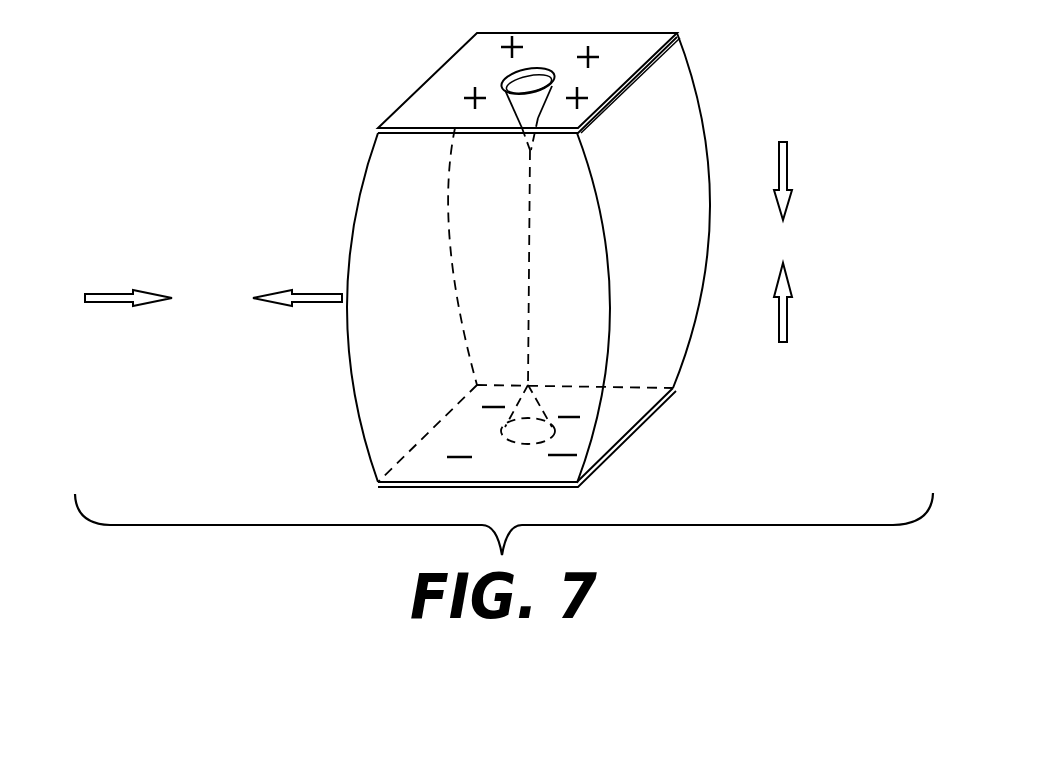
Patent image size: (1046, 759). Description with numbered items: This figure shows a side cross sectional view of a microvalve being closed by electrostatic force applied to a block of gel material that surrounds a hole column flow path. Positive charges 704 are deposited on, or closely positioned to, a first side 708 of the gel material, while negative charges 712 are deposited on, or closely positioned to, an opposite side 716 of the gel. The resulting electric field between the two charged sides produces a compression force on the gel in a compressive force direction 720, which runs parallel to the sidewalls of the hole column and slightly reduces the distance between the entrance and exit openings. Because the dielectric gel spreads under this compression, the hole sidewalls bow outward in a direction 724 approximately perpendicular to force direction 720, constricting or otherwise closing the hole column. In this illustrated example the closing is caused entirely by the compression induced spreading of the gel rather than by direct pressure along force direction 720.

The positive charges 704 is at (505, 48).
The first side 708 is at (653, 58).
The negative charges 712 is at (560, 454).
The opposite side 716 is at (672, 389).
The compressive force direction 720 is at (783, 242).
The direction 724 is at (213, 299).